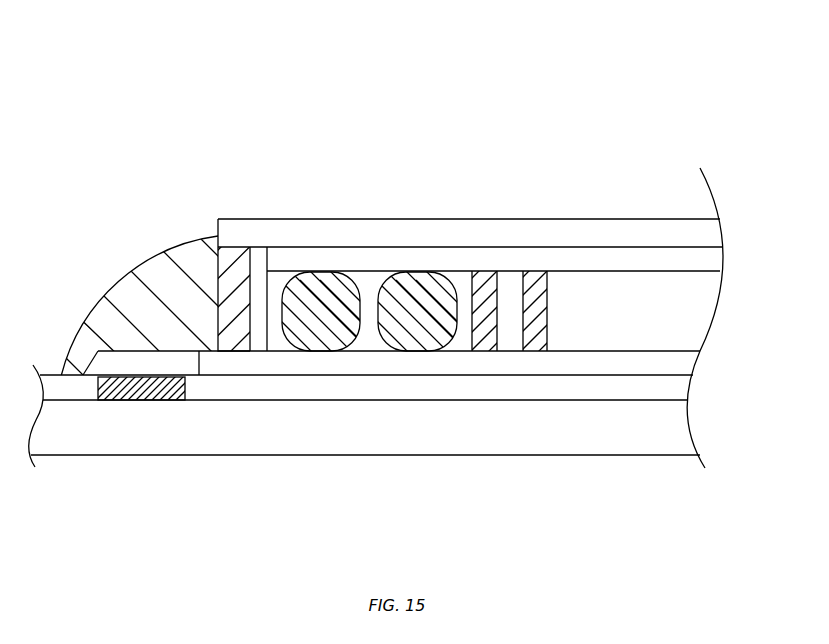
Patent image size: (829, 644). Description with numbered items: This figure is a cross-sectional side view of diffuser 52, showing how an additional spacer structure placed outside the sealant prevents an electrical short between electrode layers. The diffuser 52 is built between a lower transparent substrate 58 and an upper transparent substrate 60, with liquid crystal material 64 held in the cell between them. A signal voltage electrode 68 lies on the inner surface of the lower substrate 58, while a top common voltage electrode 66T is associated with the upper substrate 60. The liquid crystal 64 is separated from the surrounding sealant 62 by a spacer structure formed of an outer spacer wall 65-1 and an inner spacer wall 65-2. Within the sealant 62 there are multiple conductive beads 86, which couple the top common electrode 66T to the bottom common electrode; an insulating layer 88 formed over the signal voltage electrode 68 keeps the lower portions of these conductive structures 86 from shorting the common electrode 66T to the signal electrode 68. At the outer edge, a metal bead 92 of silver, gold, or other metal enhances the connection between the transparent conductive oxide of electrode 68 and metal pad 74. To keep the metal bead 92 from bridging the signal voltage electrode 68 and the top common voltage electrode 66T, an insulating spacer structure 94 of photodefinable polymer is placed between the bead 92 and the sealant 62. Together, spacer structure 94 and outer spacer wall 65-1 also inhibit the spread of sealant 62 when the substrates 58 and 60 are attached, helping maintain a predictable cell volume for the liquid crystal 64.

The diffuser 52 is at (602, 83).
The substrate 58 is at (678, 427).
The substrate 60 is at (407, 228).
The sealant 62 is at (283, 272).
The liquid crystal material 64 is at (698, 313).
The outer spacer wall 65-1 is at (492, 274).
The inner spacer wall 65-2 is at (546, 274).
The top common voltage electrode 66T is at (708, 258).
The signal voltage electrode 68 is at (683, 388).
The metal pad 74 is at (143, 392).
The conductive structure 86 is at (327, 272).
The insulating layer 88 is at (683, 363).
The metal bead 92 is at (153, 277).
The insulating spacer structure 94 is at (240, 250).